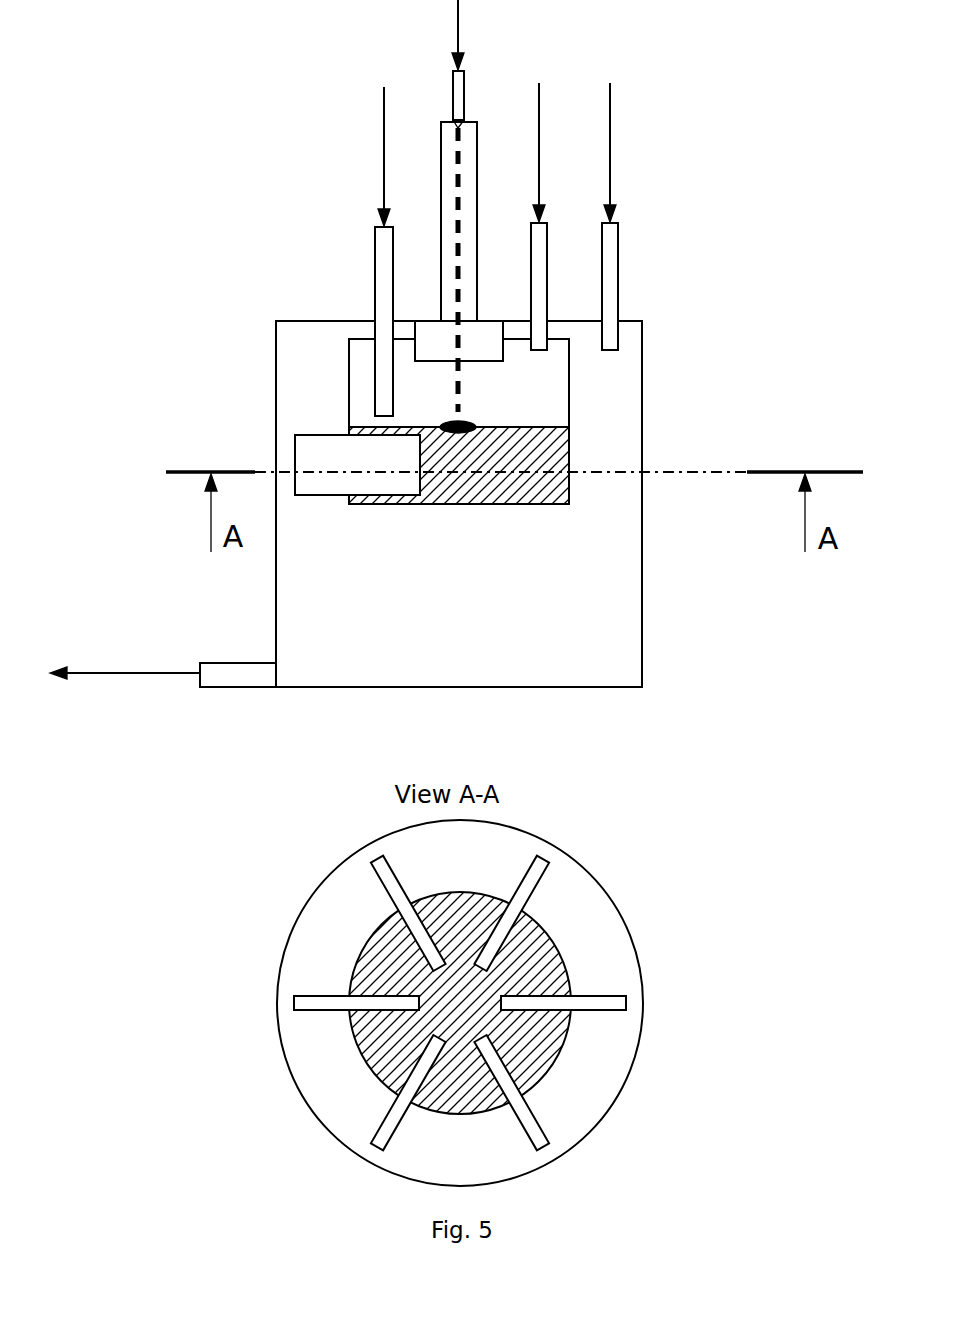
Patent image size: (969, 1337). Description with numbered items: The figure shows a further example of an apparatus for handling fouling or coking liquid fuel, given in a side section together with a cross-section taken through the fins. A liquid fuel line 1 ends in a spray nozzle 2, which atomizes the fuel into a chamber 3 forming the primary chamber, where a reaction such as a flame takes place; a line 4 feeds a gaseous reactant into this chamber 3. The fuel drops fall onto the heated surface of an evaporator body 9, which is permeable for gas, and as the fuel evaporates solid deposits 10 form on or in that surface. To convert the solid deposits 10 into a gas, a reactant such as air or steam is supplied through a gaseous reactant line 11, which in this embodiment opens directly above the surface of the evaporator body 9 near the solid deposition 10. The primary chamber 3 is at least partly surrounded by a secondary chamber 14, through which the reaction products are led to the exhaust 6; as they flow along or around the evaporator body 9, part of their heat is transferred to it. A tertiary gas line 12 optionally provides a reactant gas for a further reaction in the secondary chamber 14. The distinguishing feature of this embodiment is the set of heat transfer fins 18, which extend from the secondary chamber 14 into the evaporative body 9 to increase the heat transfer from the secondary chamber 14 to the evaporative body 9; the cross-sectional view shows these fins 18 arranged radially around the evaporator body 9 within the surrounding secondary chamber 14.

The liquid fuel line 1 is at (518, 60).
The spray nozzle 2 is at (423, 233).
The chamber 3 is at (533, 421).
The line 4 is at (650, 215).
The exhaust 6 is at (163, 619).
The evaporator body 9 is at (578, 762).
The solid deposits 10 is at (309, 320).
The gaseous reactant line 11 is at (310, 251).
The tertiary gas line 12 is at (687, 216).
The secondary chamber 14 is at (547, 753).
The heat transfer fins 18 is at (371, 746).